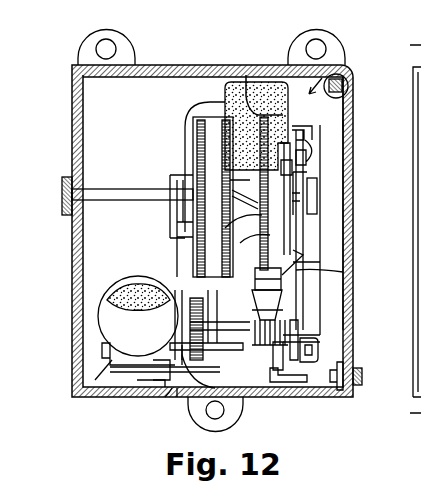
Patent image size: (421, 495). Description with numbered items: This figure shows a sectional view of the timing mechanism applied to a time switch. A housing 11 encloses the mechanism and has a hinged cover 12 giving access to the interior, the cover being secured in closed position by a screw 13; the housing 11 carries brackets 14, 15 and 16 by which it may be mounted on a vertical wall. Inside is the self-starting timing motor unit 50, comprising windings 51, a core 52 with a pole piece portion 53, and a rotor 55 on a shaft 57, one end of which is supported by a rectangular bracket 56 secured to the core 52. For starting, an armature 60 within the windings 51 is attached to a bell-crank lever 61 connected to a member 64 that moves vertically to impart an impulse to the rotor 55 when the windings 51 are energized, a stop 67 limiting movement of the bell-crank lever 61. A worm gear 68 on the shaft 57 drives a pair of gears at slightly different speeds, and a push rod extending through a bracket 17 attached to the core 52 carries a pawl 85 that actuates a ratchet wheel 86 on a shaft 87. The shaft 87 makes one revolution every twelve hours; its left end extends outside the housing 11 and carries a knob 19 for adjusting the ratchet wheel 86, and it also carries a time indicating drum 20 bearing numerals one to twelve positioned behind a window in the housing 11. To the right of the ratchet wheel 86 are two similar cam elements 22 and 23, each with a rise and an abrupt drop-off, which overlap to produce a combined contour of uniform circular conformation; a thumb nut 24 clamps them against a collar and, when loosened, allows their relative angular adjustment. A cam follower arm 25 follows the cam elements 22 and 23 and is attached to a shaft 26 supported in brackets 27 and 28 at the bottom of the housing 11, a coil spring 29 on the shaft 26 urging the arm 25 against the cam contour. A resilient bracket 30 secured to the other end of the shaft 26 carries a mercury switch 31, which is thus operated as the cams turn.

The housing 11 is at (163, 65).
The hinged cover 12 is at (352, 243).
The screw 13 is at (360, 383).
The bracket 14 is at (120, 43).
The bracket 15 is at (315, 33).
The bracket 16 is at (236, 410).
The bracket 17 is at (172, 262).
The knob 19 is at (60, 193).
The time indicating drum 20 is at (190, 125).
The cam element 22 is at (312, 135).
The cam element 23 is at (302, 166).
The thumb nut 24 is at (320, 177).
The cam follower arm 25 is at (300, 268).
The shaft 26 is at (170, 395).
The bracket 27 is at (165, 377).
The bracket 28 is at (288, 374).
The coil spring 29 is at (320, 348).
The resilient bracket 30 is at (80, 380).
The mercury switch 31 is at (115, 325).
The timing motor unit 50 is at (338, 67).
The windings 51 is at (225, 93).
The core 52 is at (330, 218).
The pole piece portion 53 is at (177, 398).
The rotor 55 is at (252, 312).
The rectangular bracket 56 is at (178, 300).
The shaft 57 is at (304, 323).
The armature 60 is at (296, 140).
The bell-crank lever 61 is at (254, 212).
The member 64 is at (213, 352).
The stop 67 is at (353, 133).
The worm gear 68 is at (270, 355).
The pawl 85 is at (255, 284).
The ratchet wheel 86 is at (246, 75).
The shaft 87 is at (132, 192).